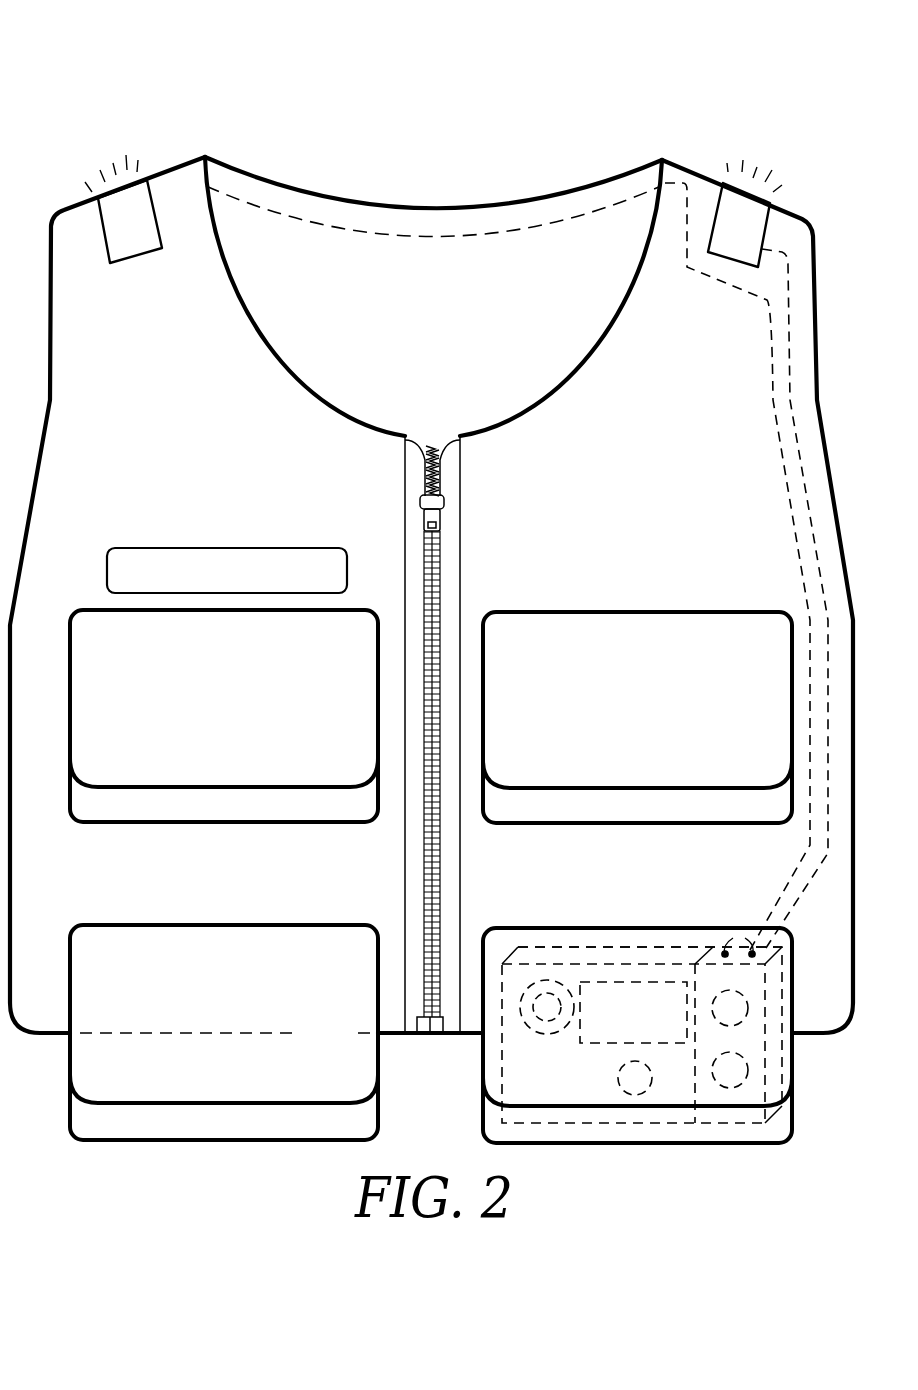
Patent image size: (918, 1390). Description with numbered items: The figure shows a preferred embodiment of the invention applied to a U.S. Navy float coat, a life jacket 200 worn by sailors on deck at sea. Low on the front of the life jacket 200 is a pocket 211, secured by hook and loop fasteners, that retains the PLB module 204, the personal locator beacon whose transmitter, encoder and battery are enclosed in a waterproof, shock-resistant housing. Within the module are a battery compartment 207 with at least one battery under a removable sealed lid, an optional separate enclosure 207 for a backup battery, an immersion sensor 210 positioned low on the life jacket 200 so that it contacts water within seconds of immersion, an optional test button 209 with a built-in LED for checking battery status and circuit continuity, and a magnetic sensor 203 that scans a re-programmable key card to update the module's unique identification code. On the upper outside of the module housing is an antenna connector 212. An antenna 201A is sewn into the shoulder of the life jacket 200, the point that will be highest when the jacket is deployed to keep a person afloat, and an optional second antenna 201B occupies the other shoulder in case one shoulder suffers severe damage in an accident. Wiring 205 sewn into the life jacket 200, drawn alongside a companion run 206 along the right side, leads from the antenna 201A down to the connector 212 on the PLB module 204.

The life jacket 200 is at (330, 166).
The antenna 201A is at (711, 188).
The optional antenna 201B is at (156, 188).
The magnetic sensor 203 is at (583, 982).
The PLB module 204 is at (643, 962).
The wiring 205 is at (790, 484).
The wire 206 is at (773, 440).
The battery compartment 207 is at (728, 1028).
The test button 209 is at (523, 990).
The immersion sensor 210 is at (652, 1073).
The pocket 211 is at (483, 1082).
The antenna connector 212 is at (745, 938).